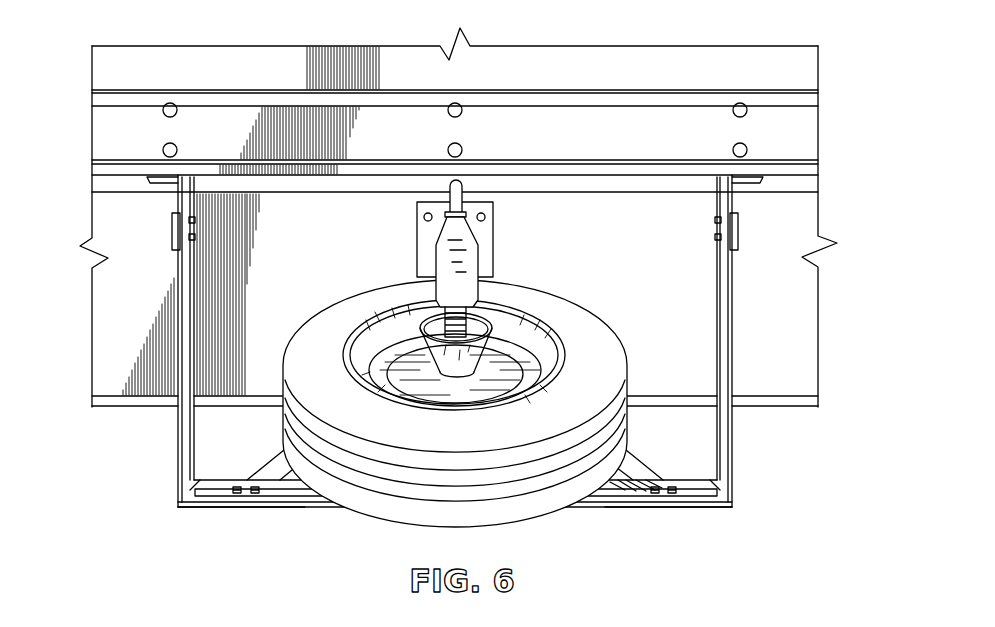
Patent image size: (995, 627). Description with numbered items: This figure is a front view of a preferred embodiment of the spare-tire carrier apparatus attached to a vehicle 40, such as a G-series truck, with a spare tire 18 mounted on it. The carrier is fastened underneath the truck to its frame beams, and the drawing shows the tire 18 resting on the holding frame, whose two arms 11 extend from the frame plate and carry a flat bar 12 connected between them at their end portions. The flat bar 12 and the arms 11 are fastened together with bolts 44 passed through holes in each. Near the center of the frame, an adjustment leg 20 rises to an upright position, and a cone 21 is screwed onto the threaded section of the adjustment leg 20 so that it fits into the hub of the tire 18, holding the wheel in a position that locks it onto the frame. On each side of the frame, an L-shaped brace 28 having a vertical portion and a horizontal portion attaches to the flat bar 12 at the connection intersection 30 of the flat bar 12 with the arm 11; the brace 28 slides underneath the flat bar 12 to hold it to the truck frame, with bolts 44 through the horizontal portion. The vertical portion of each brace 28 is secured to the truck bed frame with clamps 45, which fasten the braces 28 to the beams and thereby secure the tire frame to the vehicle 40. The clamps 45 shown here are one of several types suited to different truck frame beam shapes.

The vehicle 40 is at (138, 282).
The clamps 45 is at (735, 203).
The braces 28 is at (728, 322).
The adjustment leg 20 is at (437, 345).
The cone 21 is at (490, 353).
The arms 11 is at (262, 463).
The flat bar 12 is at (285, 490).
The spare tire 18 is at (370, 508).
The connection intersection 30 is at (222, 507).
The bolts 44 is at (255, 495).